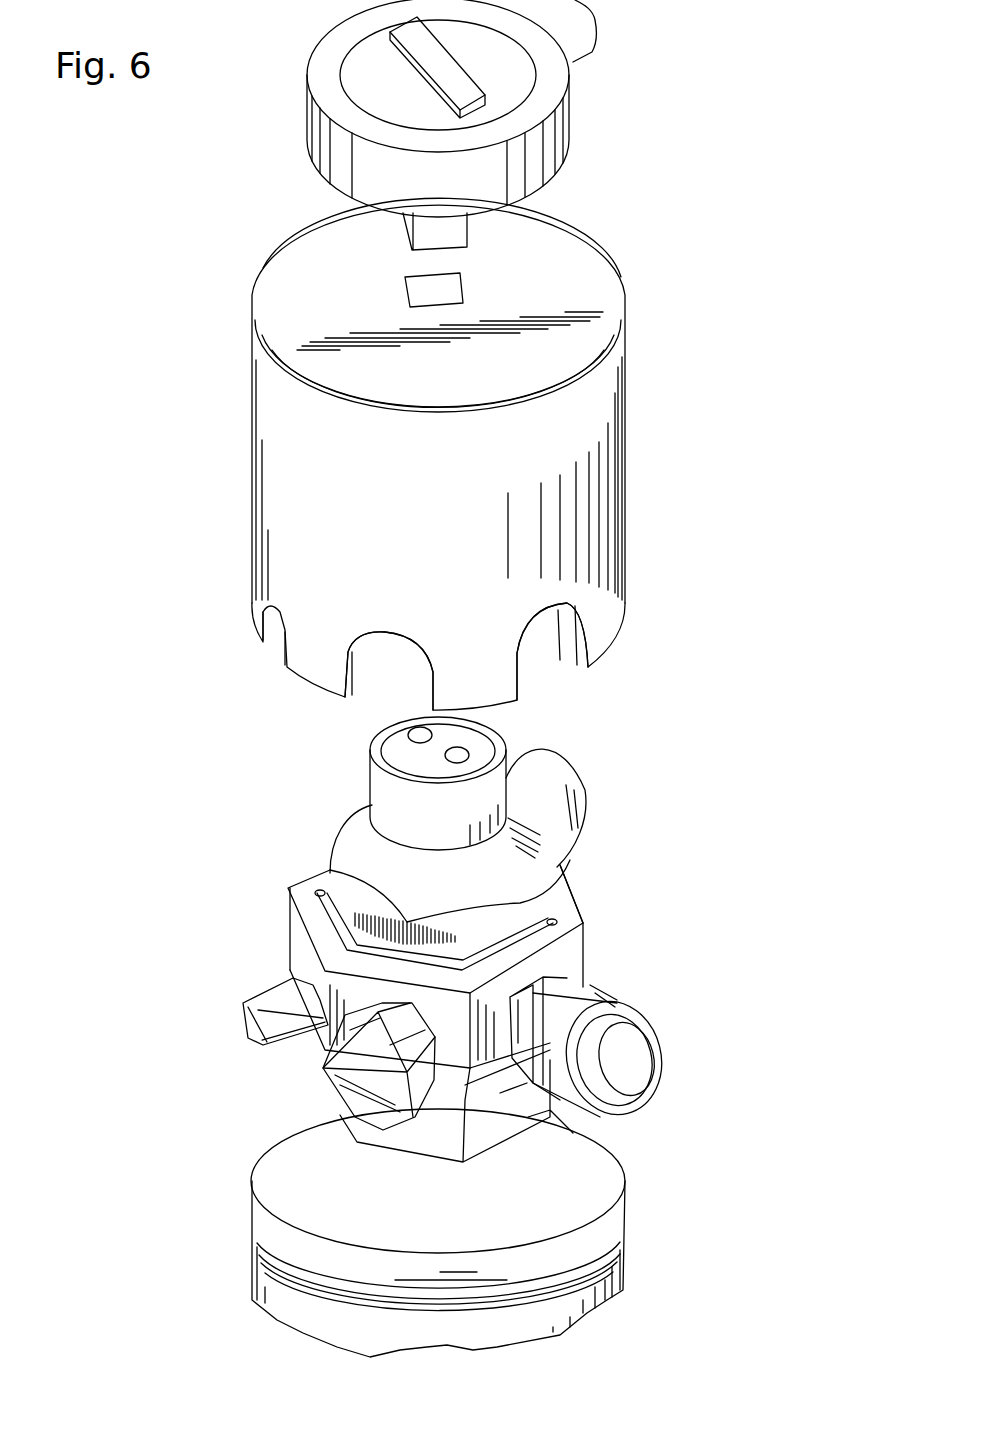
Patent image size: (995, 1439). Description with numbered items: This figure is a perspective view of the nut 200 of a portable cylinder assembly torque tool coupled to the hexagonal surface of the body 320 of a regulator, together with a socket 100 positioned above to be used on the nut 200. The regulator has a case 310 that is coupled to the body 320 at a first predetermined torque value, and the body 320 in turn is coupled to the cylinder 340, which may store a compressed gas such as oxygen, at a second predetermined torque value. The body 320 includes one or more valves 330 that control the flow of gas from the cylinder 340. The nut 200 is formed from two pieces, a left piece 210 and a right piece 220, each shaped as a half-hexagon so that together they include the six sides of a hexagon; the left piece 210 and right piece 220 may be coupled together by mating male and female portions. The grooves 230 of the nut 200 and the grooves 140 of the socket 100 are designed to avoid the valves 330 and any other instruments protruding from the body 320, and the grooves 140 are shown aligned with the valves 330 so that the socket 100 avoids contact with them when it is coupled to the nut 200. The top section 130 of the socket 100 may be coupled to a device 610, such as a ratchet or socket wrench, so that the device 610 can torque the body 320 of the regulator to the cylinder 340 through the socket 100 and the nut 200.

The device 610 is at (573, 103).
The socket 100 is at (637, 287).
The top section 130 is at (432, 288).
The grooves 140 is at (360, 673).
The nut 200 is at (258, 909).
The case 310 is at (357, 847).
The left piece 210 is at (308, 873).
The right piece 220 is at (565, 908).
The grooves 230 is at (280, 987).
The valves 330 is at (620, 1067).
The body 320 is at (430, 1127).
The cylinder 340 is at (255, 1238).